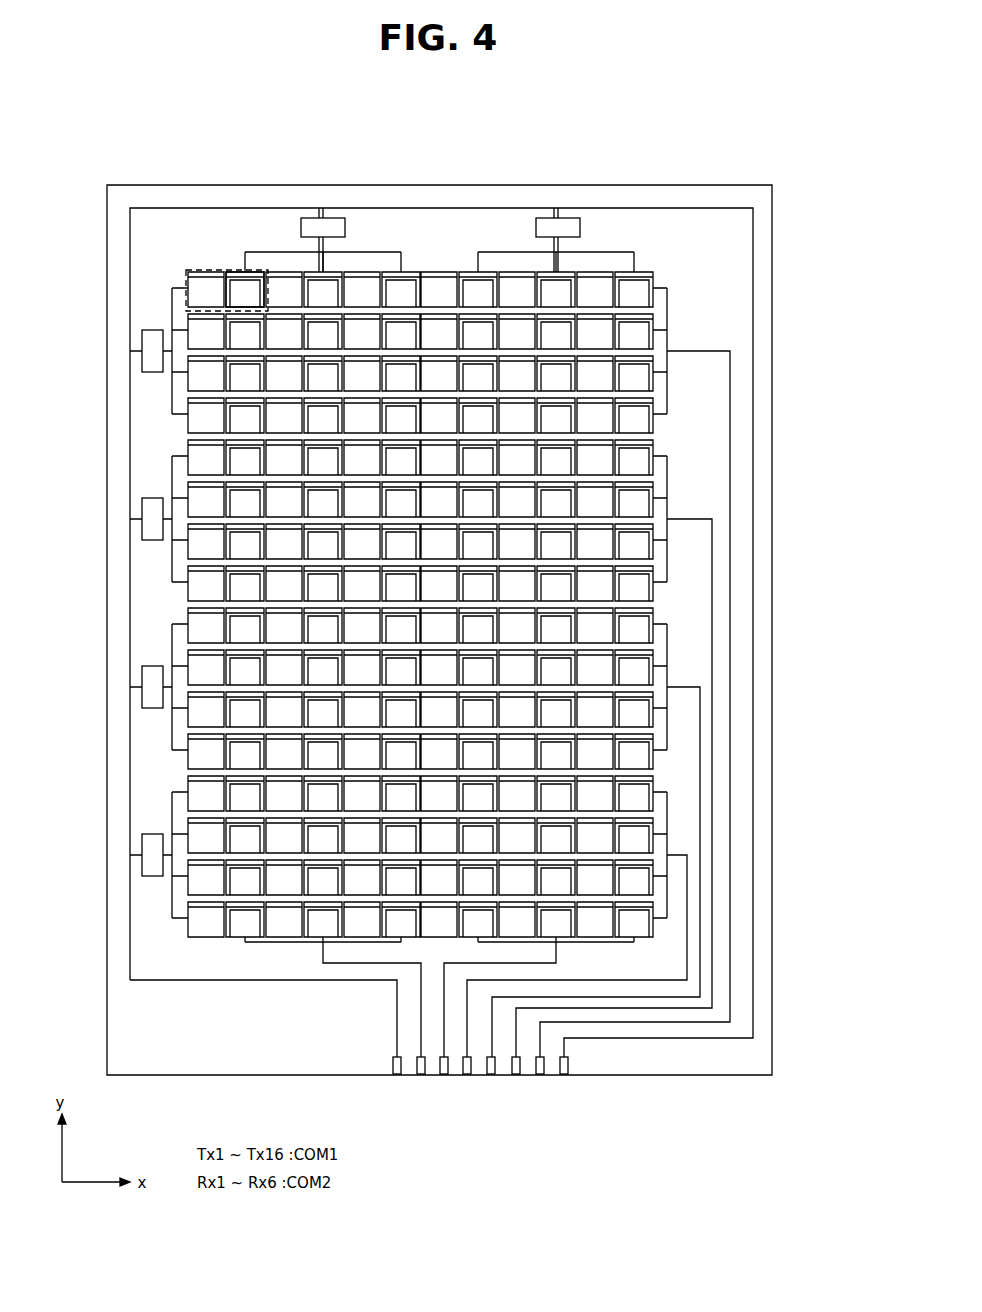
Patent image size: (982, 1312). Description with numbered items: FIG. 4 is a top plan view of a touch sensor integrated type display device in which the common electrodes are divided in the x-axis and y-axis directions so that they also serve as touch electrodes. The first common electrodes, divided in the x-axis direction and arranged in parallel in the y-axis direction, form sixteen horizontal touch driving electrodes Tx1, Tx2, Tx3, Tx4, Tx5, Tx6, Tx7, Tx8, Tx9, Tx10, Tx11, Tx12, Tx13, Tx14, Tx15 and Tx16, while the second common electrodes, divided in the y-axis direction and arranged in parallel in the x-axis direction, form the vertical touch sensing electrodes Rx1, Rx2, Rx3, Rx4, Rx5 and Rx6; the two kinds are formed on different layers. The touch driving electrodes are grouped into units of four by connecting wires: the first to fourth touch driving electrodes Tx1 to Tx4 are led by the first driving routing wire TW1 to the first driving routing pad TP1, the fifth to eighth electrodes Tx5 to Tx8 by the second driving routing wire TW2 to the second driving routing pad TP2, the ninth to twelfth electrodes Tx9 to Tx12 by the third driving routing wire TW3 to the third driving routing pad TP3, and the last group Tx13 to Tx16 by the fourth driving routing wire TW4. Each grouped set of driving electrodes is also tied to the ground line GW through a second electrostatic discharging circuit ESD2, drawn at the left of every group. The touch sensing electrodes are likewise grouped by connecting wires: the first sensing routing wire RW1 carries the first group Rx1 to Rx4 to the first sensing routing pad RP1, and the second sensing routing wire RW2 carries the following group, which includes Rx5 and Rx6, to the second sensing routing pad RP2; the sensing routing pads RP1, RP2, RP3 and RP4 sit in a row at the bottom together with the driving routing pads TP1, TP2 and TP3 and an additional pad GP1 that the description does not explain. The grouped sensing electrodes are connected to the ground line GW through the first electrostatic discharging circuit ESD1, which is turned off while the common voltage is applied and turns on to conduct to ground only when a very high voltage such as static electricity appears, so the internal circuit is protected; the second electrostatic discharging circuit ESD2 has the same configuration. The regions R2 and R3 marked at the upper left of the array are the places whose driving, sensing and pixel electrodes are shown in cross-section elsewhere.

The first touch driving electrode Tx1 is at (188, 276).
The second touch driving electrode Tx2 is at (188, 318).
The third touch driving electrode Tx3 is at (188, 377).
The fourth touch driving electrode Tx4 is at (188, 407).
The fifth touch driving electrode Tx5 is at (188, 447).
The sixth touch driving electrode Tx6 is at (188, 488).
The seventh touch driving electrode Tx7 is at (188, 548).
The eighth touch driving electrode Tx8 is at (188, 572).
The ninth touch driving electrode Tx9 is at (188, 614).
The tenth touch driving electrode Tx10 is at (188, 656).
The eleventh touch driving electrode Tx11 is at (188, 713).
The twelfth touch driving electrode Tx12 is at (188, 740).
The thirteenth touch driving electrode Tx13 is at (188, 780).
The fourteenth touch driving electrode Tx14 is at (188, 822).
The fifteenth touch driving electrode Tx15 is at (188, 882).
The sixteenth touch driving electrode Tx16 is at (188, 923).
The first touch sensing electrode Rx1 is at (245, 272).
The second touch sensing electrode Rx2 is at (319, 272).
The third touch sensing electrode Rx3 is at (401, 272).
The fourth touch sensing electrode Rx4 is at (478, 272).
The fifth touch sensing electrode Rx5 is at (554, 272).
The sixth touch sensing electrode Rx6 is at (634, 272).
The ground line GW is at (130, 244).
The first electrostatic discharging circuit ESD1 is at (439, 240).
The second electrostatic discharging circuit ESD2 is at (151, 603).
The first driving routing wire TW1 is at (731, 421).
The second driving routing wire TW2 is at (712, 591).
The third driving routing wire TW3 is at (700, 757).
The fourth driving routing wire TW4 is at (687, 925).
The first sensing routing wire RW1 is at (323, 957).
The second sensing routing wire RW2 is at (556, 957).
The region R2 is at (192, 270).
The region R3 is at (233, 270).
The guard pad GP1 is at (397, 1075).
The first driving routing pad TP1 is at (421, 1075).
The second driving routing pad TP2 is at (444, 1075).
The third driving routing pad TP3 is at (467, 1075).
The first sensing routing pad RP1 is at (564, 1075).
The second sensing routing pad RP2 is at (540, 1075).
The third sensing routing pad RP3 is at (516, 1075).
The fourth sensing routing pad RP4 is at (491, 1075).